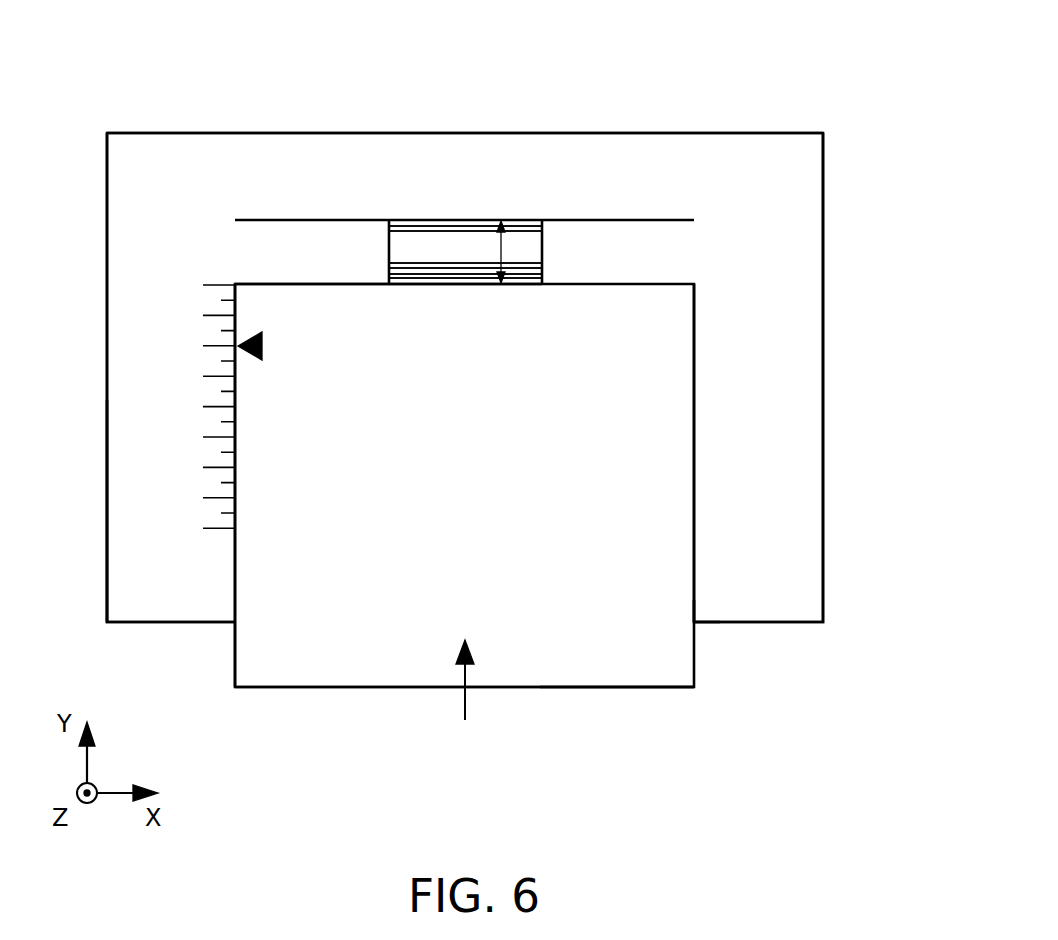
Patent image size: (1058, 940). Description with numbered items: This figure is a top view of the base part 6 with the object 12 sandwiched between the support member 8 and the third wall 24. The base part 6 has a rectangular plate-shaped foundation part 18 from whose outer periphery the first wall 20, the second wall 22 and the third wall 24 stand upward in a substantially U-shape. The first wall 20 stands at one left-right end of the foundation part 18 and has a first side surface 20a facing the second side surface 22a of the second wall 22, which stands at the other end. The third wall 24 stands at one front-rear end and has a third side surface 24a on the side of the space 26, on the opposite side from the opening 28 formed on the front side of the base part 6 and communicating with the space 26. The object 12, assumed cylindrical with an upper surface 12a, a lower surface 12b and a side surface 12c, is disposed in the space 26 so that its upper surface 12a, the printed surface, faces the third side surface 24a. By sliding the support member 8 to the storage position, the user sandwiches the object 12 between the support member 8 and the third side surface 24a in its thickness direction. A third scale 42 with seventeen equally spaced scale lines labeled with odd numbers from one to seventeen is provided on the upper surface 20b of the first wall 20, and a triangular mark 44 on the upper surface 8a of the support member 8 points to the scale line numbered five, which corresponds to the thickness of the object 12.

The base part 6 is at (869, 100).
The support member 8 is at (563, 667).
The upper surface of the support member 8a is at (622, 667).
The object 12 is at (456, 234).
The upper surface of the object 12a is at (422, 218).
The lower surface of the object 12b is at (416, 285).
The side surface of the object 12c is at (477, 255).
The foundation part 18 is at (322, 235).
The first wall 20 is at (122, 497).
The first side surface 20a is at (237, 571).
The upper surface of the first wall 20b is at (125, 545).
The second wall 22 is at (796, 292).
The second side surface 22a is at (694, 337).
The third wall 24 is at (623, 152).
The third side surface 24a is at (656, 221).
The space 26 is at (487, 456).
The opening 28 is at (694, 608).
The third scale 42 is at (150, 375).
The mark 44 is at (262, 346).